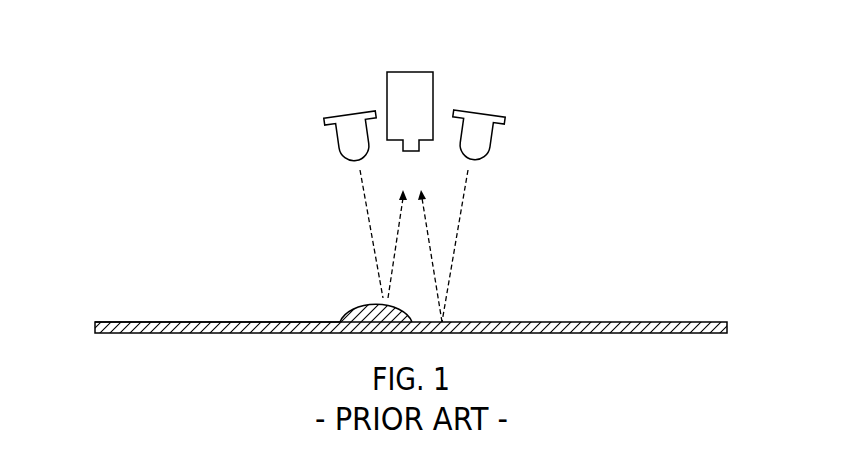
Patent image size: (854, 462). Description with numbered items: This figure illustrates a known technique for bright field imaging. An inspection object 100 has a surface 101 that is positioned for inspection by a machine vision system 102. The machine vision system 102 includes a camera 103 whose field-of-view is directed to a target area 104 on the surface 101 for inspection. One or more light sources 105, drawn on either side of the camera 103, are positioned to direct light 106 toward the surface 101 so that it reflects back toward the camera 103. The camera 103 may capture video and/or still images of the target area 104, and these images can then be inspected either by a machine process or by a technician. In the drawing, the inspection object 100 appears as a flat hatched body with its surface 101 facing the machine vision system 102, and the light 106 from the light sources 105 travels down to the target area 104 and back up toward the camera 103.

The inspection object 100 is at (95, 331).
The surface 101 is at (140, 322).
The machine vision system 102 is at (417, 86).
The camera 103 is at (398, 72).
The target area 104 is at (439, 254).
The light sources 105 is at (333, 118).
The light 106 is at (468, 183).